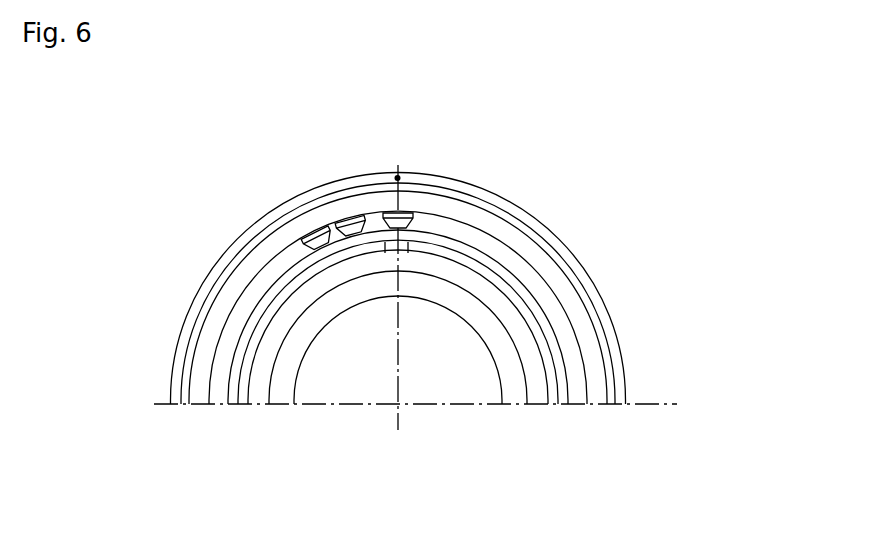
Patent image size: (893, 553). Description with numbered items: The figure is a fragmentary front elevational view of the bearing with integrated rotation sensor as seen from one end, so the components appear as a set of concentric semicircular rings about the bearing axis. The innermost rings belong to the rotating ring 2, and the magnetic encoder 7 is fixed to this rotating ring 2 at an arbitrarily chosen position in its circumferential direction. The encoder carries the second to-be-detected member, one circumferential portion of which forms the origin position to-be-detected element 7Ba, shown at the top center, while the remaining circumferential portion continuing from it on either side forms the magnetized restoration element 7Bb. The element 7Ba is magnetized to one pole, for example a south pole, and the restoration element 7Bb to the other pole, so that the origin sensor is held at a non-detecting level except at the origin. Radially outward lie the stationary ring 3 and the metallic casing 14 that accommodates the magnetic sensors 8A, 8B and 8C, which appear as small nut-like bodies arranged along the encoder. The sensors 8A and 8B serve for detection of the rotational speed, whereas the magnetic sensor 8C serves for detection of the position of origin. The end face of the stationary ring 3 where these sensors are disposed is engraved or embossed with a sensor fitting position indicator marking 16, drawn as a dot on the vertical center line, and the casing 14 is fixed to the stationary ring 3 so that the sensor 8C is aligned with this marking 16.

The rotating ring 2 is at (482, 322).
The stationary ring 3 is at (228, 248).
The magnetic encoder 7 is at (500, 272).
The origin position to-be-detected element 7Ba is at (407, 250).
The magnetized restoration element 7Bb is at (352, 255).
The magnetic sensor 8A is at (312, 233).
The magnetic sensor 8B is at (342, 220).
The magnetic sensor 8C is at (410, 213).
The metallic casing 14 is at (490, 202).
The sensor fitting position indicator marking 16 is at (398, 175).